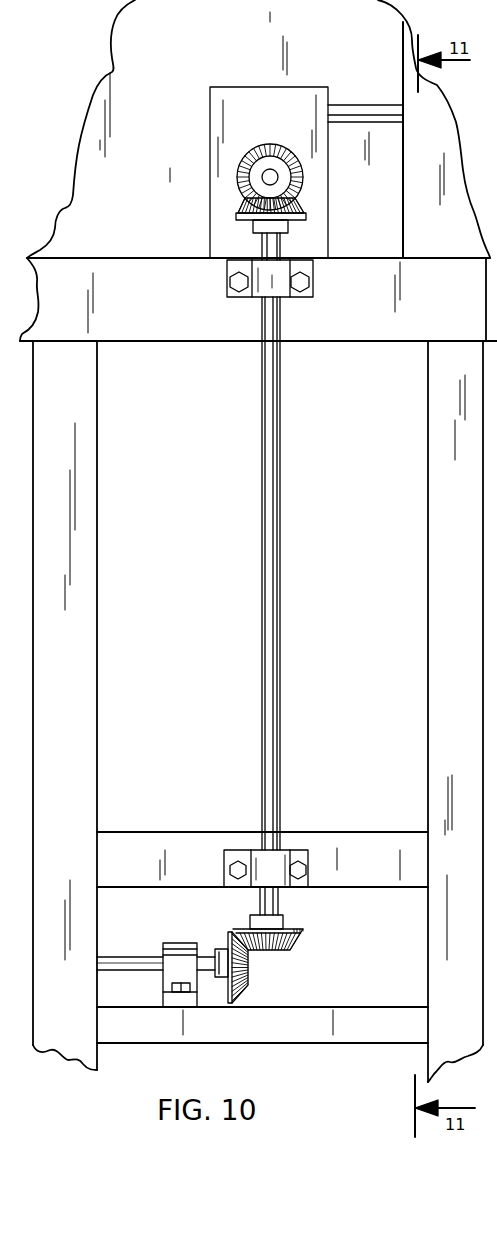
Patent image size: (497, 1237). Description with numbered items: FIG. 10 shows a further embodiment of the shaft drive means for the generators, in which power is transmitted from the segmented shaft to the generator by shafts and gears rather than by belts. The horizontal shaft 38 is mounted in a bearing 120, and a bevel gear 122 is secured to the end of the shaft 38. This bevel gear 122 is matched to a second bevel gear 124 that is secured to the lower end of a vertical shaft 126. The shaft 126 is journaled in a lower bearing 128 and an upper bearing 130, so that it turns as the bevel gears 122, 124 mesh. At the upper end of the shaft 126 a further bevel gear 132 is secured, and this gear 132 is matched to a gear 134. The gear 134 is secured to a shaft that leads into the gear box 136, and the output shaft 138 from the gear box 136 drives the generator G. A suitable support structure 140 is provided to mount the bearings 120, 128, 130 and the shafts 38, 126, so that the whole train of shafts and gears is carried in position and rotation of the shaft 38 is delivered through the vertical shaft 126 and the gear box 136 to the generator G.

The generator G is at (455, 137).
The shaft portion 38 is at (128, 962).
The bearing 120 is at (172, 972).
The bevel gear 122 is at (249, 982).
The bevel gear 124 is at (294, 941).
The shaft 126 is at (276, 768).
The bearing 128 is at (284, 857).
The bearing 130 is at (306, 296).
The bevel gear 132 is at (298, 212).
The gear 134 is at (277, 144).
The gear box 136 is at (242, 100).
The output shaft 138 is at (357, 108).
The support structure 140 is at (102, 551).